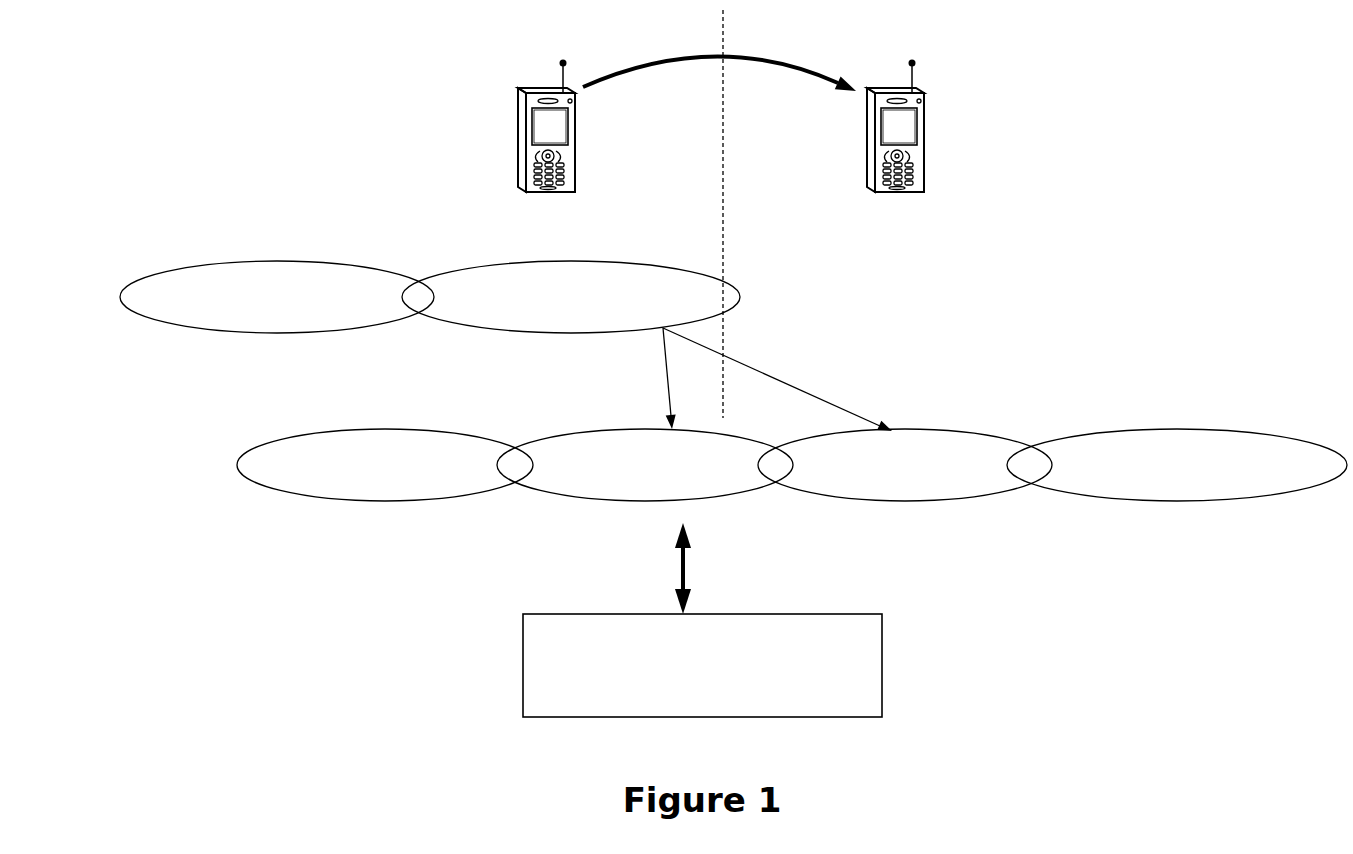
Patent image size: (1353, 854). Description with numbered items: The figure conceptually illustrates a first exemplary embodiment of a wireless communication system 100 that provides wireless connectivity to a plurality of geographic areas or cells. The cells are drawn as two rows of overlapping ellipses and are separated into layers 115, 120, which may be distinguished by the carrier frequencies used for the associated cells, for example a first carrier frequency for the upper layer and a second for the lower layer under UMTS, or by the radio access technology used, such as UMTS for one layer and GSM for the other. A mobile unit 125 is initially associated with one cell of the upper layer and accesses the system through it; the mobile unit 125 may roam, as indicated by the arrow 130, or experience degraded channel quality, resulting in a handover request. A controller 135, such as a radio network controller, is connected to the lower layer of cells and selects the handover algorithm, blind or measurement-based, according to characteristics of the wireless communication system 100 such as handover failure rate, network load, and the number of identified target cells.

The wireless communication system 100 is at (1112, 99).
The layer 115 is at (92, 296).
The layer 120 is at (197, 462).
The mobile unit 125 is at (523, 88).
The arrow 130 is at (753, 58).
The controller 135 is at (667, 691).